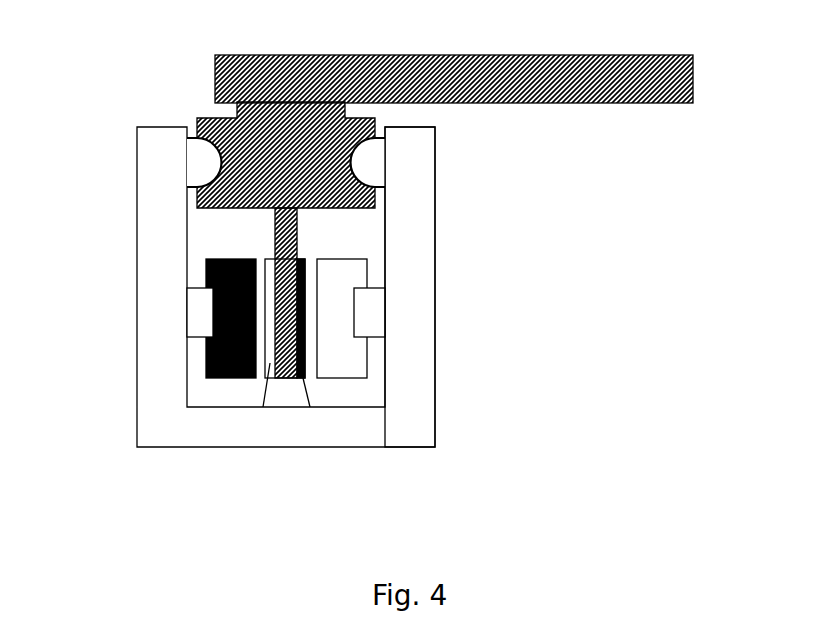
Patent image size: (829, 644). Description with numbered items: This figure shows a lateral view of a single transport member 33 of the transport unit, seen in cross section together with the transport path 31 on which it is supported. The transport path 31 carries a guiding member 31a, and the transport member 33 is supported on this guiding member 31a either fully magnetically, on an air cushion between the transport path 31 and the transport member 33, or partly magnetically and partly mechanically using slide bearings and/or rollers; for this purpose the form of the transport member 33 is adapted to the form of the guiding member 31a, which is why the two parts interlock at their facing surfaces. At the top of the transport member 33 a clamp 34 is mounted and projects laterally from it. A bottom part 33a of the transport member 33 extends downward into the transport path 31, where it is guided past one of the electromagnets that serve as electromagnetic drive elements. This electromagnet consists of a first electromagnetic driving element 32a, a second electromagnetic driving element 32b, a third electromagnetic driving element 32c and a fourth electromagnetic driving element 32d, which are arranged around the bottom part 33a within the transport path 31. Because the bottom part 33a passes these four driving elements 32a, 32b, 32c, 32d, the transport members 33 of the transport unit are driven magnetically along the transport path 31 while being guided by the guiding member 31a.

The transport path 31 is at (400, 447).
The guiding member 31a is at (435, 182).
The first electromagnetic driving element 32a is at (343, 347).
The second electromagnetic driving element 32b is at (323, 447).
The third electromagnetic driving element 32c is at (260, 447).
The fourth electromagnetic driving element 32d is at (206, 358).
The transport member 33 is at (200, 117).
The bottom part of the transport member 33a is at (297, 230).
The clamp 34 is at (610, 105).